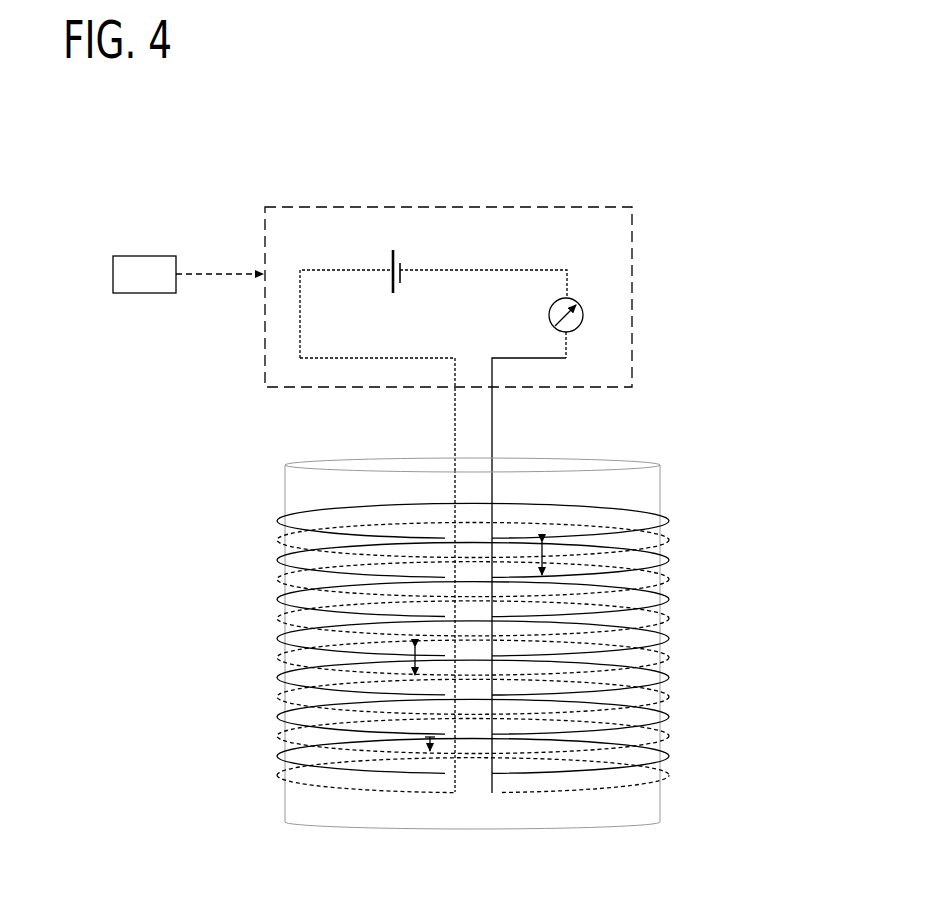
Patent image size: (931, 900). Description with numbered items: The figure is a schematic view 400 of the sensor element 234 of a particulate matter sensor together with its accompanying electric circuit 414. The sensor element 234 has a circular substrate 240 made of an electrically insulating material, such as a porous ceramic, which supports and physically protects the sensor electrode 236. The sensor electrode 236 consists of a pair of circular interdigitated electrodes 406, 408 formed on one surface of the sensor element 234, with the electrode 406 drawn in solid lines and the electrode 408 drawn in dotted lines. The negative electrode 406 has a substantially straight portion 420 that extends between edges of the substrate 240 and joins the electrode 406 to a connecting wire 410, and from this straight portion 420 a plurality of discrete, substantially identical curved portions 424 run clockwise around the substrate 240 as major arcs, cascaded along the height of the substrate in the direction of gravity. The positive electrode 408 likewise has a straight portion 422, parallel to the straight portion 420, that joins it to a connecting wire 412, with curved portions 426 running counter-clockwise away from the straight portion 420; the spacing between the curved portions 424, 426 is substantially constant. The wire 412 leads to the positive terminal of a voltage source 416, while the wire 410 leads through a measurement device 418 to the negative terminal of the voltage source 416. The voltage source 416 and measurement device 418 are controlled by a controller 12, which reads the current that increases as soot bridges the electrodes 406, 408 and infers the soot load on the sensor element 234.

The schematic view 400 is at (675, 103).
The controller 12 is at (188, 274).
The electric circuit 414 is at (636, 309).
The voltage source 416 is at (391, 250).
The measurement device 418 is at (575, 302).
The connecting wire 410 is at (493, 420).
The connecting wire 412 is at (455, 418).
The straight portion 420 is at (493, 483).
The straight portion 422 is at (455, 483).
The sensor element 234 is at (145, 516).
The sensor electrode 236 is at (467, 637).
The substrate 240 is at (514, 830).
The electrode 406 is at (504, 627).
The electrode 408 is at (506, 651).
The curved portions 424 is at (672, 742).
The curved portions 426 is at (672, 683).